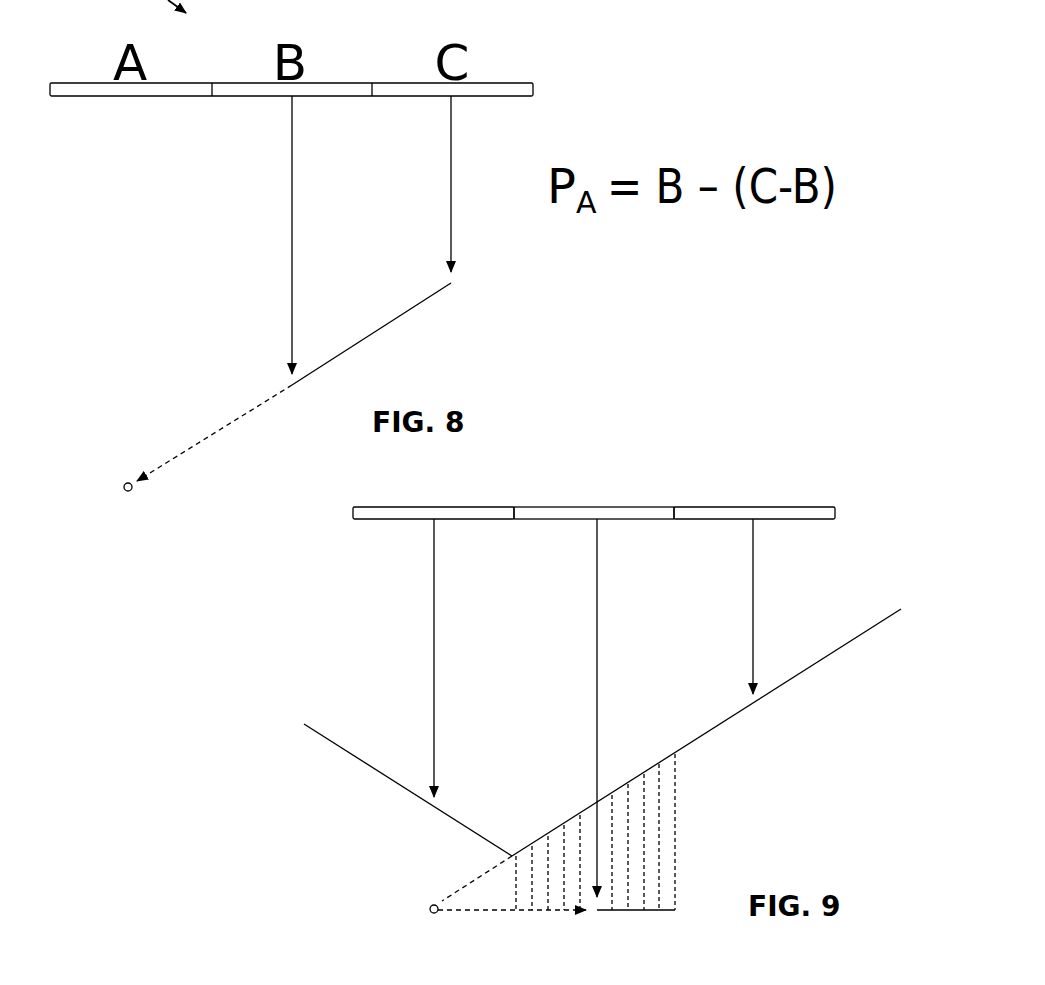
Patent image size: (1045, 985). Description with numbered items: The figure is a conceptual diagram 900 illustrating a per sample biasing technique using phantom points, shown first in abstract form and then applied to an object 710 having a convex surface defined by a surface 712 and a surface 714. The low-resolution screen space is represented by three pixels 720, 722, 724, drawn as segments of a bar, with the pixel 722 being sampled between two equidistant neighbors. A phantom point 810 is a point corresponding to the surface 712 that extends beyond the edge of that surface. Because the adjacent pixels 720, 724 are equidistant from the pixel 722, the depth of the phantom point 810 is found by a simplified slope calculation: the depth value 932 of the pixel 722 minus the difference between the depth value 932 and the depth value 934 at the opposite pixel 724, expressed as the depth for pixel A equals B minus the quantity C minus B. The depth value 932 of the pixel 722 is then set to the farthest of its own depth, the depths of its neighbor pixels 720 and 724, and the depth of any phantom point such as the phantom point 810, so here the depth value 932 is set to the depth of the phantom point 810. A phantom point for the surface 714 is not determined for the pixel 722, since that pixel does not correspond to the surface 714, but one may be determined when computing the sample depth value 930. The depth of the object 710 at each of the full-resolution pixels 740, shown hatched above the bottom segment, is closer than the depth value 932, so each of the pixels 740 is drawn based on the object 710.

In FIG. 8, the surface 712 is at (405, 314).
In FIG. 9, the surface 712 is at (715, 728).
In FIG. 8, the phantom point 810 is at (131, 480).
In FIG. 9, the phantom point 810 is at (430, 904).
In FIG. 9, the conceptual diagram 900 is at (750, 430).
In FIG. 9, the pixel 720 is at (407, 507).
In FIG. 9, the pixel 722 is at (568, 507).
In FIG. 9, the pixel 724 is at (731, 507).
In FIG. 9, the sample depth value 930 is at (432, 620).
In FIG. 9, the depth value 932 is at (595, 623).
In FIG. 9, the depth value 934 is at (752, 623).
In FIG. 9, the surface 714 is at (343, 749).
In FIG. 9, the object 710 is at (557, 759).
In FIG. 9, the pixels 740 is at (640, 912).